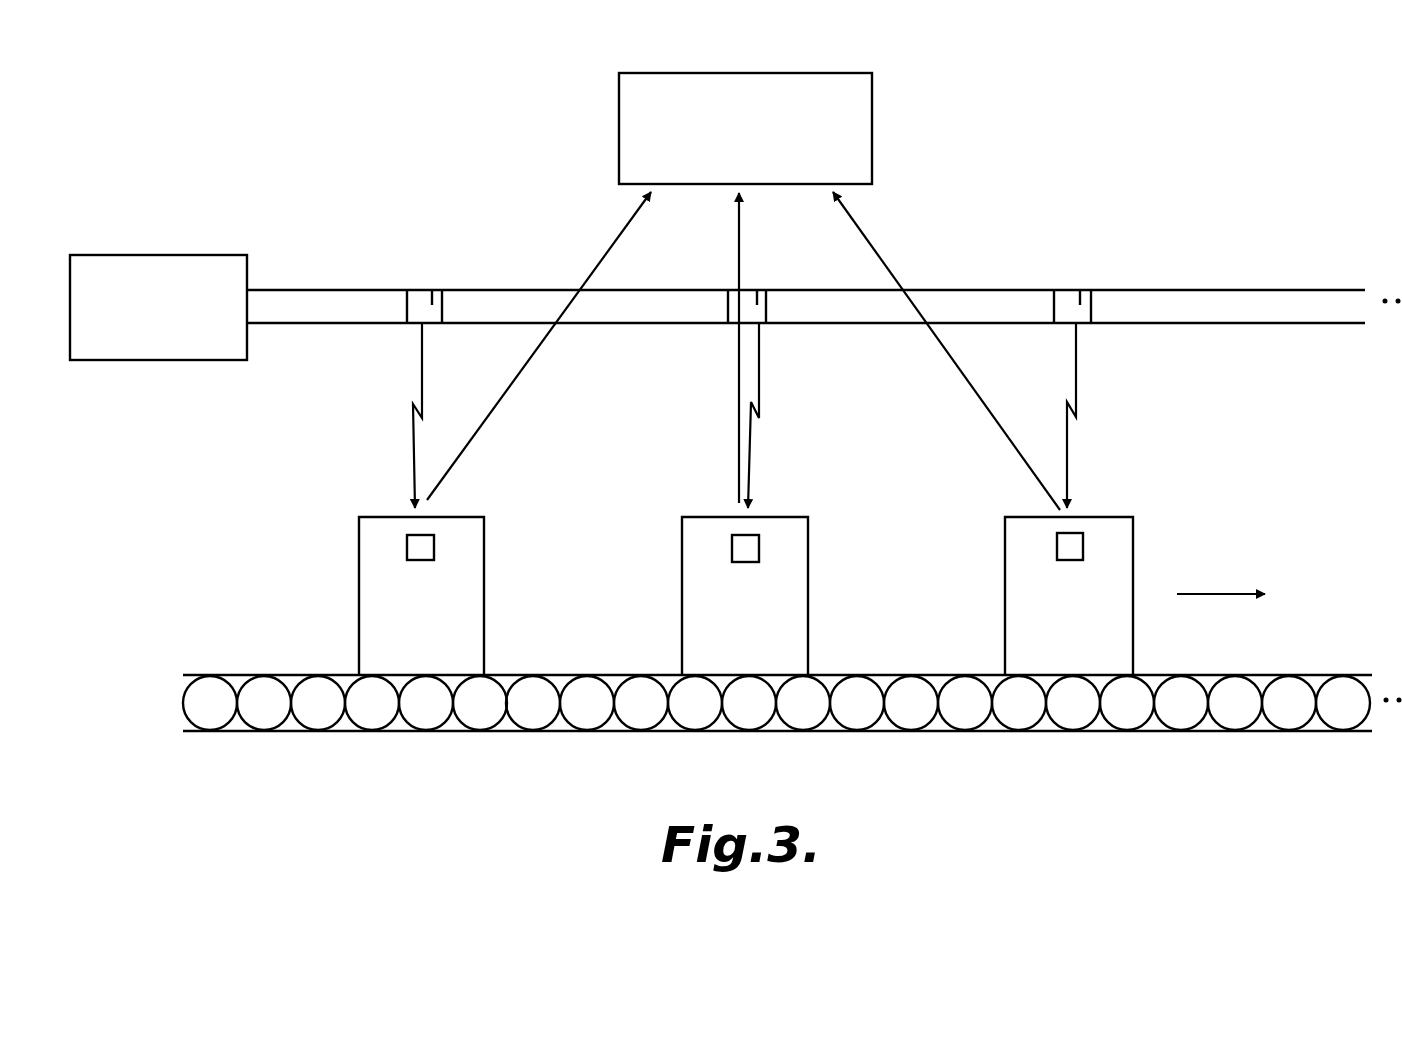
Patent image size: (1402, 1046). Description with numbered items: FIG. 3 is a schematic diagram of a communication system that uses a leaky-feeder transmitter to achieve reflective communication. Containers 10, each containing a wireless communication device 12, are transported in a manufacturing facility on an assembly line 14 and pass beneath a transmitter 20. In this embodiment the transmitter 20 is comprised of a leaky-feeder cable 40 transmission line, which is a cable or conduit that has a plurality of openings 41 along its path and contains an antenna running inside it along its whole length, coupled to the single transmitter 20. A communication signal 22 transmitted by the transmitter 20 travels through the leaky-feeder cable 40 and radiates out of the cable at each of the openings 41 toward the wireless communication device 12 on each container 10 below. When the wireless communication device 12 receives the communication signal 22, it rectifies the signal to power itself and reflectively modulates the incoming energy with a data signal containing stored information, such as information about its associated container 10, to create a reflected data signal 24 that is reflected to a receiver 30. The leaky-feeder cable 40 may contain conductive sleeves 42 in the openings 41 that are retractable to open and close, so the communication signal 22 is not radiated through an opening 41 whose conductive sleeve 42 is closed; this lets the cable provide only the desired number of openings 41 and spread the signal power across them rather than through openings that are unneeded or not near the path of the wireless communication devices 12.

The container 10 is at (359, 554).
The wireless communication device 12 is at (422, 536).
The assembly line 14 is at (1207, 731).
The transmitter 20 is at (144, 333).
The communication signal 22 is at (425, 382).
The reflected data signal 24 is at (618, 237).
The receiver 30 is at (731, 157).
The leaky-feeder cable 40 is at (290, 289).
The opening 41 is at (408, 289).
The conductive sleeve 42 is at (433, 300).